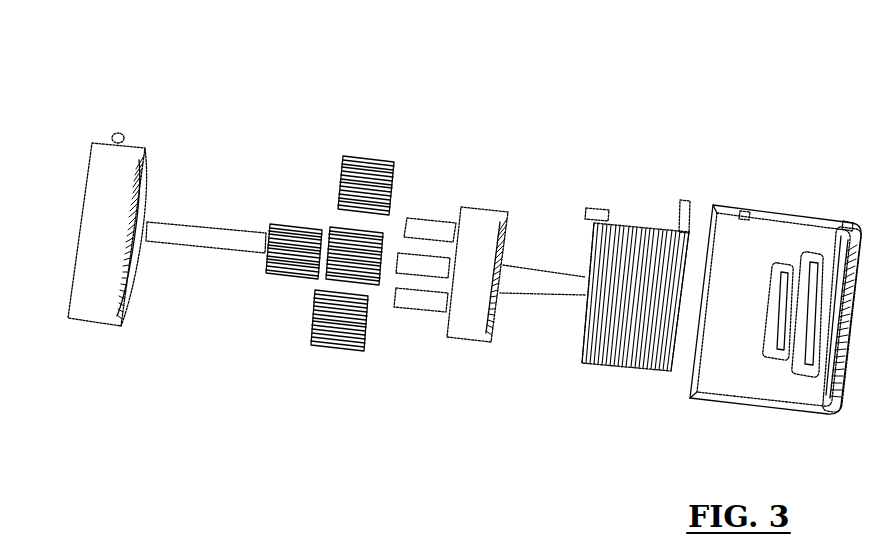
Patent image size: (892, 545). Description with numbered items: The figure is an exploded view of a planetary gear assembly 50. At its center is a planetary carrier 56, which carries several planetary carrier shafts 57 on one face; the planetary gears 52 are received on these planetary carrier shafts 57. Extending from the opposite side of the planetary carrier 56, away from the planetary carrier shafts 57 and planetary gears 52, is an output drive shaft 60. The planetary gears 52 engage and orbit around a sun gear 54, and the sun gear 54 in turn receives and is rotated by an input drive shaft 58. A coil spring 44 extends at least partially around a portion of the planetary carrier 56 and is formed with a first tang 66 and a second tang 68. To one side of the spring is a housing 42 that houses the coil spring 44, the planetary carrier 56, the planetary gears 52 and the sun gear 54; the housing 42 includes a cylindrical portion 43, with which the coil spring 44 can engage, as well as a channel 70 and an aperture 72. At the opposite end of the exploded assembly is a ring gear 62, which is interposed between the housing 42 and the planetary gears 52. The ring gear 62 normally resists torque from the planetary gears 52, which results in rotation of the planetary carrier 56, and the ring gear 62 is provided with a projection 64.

The housing 42 is at (750, 358).
The cylindrical portion 43 is at (818, 352).
The coil spring 44 is at (614, 320).
The planetary gear assembly 50 is at (734, 86).
The planetary gears 52 is at (342, 175).
The sun gear 54 is at (300, 232).
The planetary carrier 56 is at (472, 305).
The planetary carrier shafts 57 is at (438, 232).
The input drive shaft 58 is at (205, 240).
The output drive shaft 60 is at (533, 283).
The ring gear 62 is at (110, 253).
The projection 64 is at (117, 134).
The first tang 66 is at (605, 214).
The second tang 68 is at (688, 200).
The channel 70 is at (723, 212).
The aperture 72 is at (850, 216).